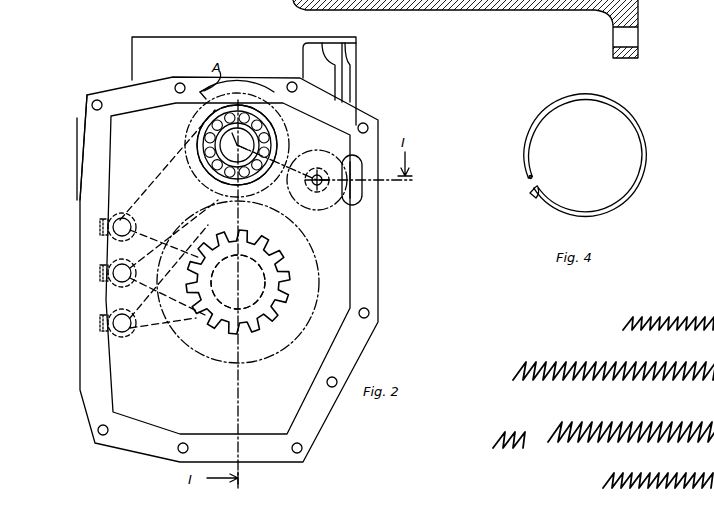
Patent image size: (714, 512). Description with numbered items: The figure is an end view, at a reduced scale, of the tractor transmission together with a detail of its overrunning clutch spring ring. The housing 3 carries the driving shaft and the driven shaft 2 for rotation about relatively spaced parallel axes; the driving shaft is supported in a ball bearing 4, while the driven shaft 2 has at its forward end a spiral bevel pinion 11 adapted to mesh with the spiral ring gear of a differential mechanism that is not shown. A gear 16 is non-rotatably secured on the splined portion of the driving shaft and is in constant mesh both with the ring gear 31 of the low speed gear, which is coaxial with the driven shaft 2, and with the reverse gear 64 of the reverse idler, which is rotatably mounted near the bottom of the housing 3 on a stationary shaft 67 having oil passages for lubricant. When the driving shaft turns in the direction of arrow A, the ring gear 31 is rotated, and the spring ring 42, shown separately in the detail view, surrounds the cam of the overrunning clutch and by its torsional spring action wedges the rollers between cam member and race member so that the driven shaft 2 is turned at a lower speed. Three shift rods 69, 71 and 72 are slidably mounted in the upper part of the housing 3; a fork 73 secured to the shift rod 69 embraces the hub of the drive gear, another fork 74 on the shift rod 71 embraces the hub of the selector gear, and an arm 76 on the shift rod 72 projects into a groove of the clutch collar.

In FIG. 2, the driven shaft 2 is at (284, 293).
In FIG. 2, the housing 3 is at (379, 272).
In FIG. 2, the ball bearing 4 is at (195, 118).
In FIG. 2, the spiral bevel pinion 11 is at (238, 282).
In FIG. 2, the gear 16 is at (285, 122).
In FIG. 2, the ring gear 31 is at (258, 363).
In FIG. 4, the spring ring 42 is at (638, 128).
In FIG. 2, the reverse gear 64 is at (320, 215).
In FIG. 2, the stationary shaft 67 is at (317, 174).
In FIG. 2, the shift rod 69 is at (122, 216).
In FIG. 2, the shift rod 71 is at (122, 263).
In FIG. 2, the shift rod 72 is at (122, 334).
In FIG. 2, the fork 73 is at (155, 172).
In FIG. 2, the fork 74 is at (166, 238).
In FIG. 2, the arm 76 is at (166, 330).